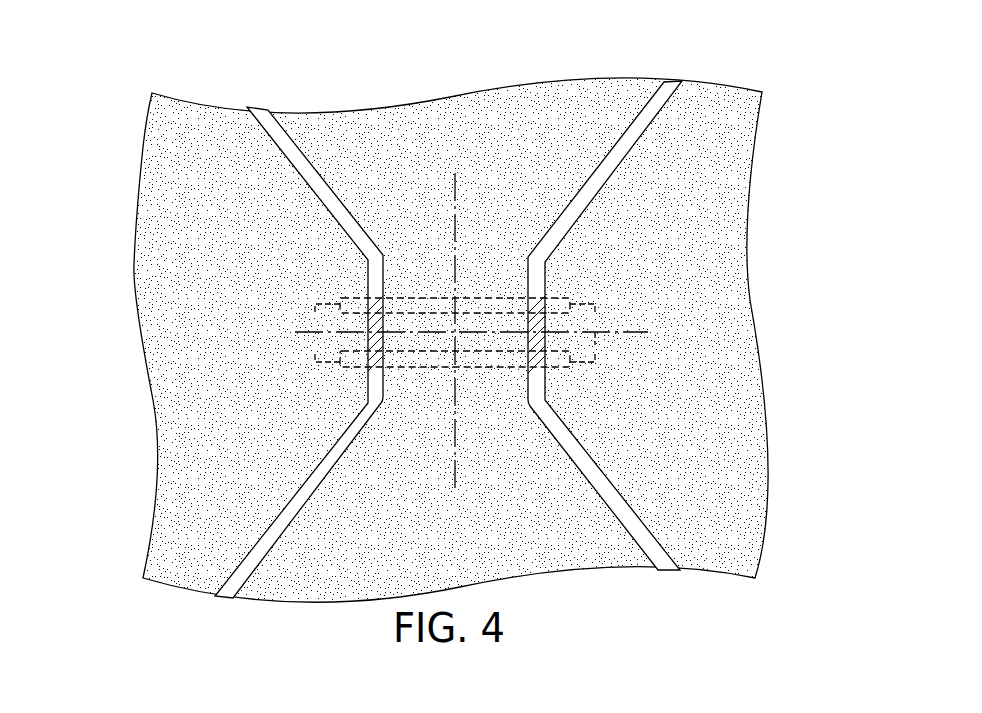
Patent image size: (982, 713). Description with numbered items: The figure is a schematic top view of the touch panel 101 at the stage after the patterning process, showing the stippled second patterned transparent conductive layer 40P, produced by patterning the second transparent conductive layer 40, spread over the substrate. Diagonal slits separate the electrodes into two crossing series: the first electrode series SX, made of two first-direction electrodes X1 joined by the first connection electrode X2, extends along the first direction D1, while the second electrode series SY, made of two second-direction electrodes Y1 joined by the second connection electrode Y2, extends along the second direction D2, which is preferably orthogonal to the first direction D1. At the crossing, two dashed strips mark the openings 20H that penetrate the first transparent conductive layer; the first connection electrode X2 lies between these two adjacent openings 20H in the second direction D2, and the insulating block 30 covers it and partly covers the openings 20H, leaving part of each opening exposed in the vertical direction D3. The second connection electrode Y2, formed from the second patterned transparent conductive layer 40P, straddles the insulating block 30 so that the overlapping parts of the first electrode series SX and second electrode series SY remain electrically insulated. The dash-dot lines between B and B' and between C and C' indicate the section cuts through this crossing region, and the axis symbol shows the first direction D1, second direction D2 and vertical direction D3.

The touch panel 101 is at (745, 45).
The second patterned transparent conductive layer 40P is at (673, 199).
The second transparent conductive layer 40 is at (504, 340).
The openings 20H is at (575, 296).
The insulating block 30 is at (573, 312).
The second electrode series SY is at (458, 70).
The second-direction electrodes Y1 is at (327, 148).
The second connection electrode Y2 is at (395, 407).
The first electrode series SX is at (100, 323).
The first-direction electrodes X1 is at (205, 365).
The first connection electrode X2 is at (362, 417).
The section line B-B' start B is at (495, 323).
The section line B-B' end B' is at (501, 489).
The section line C-C' start C is at (466, 371).
The section line C-C' end C' is at (659, 366).
The first direction D1 is at (95, 612).
The second direction D2 is at (85, 602).
The vertical direction D3 is at (78, 605).